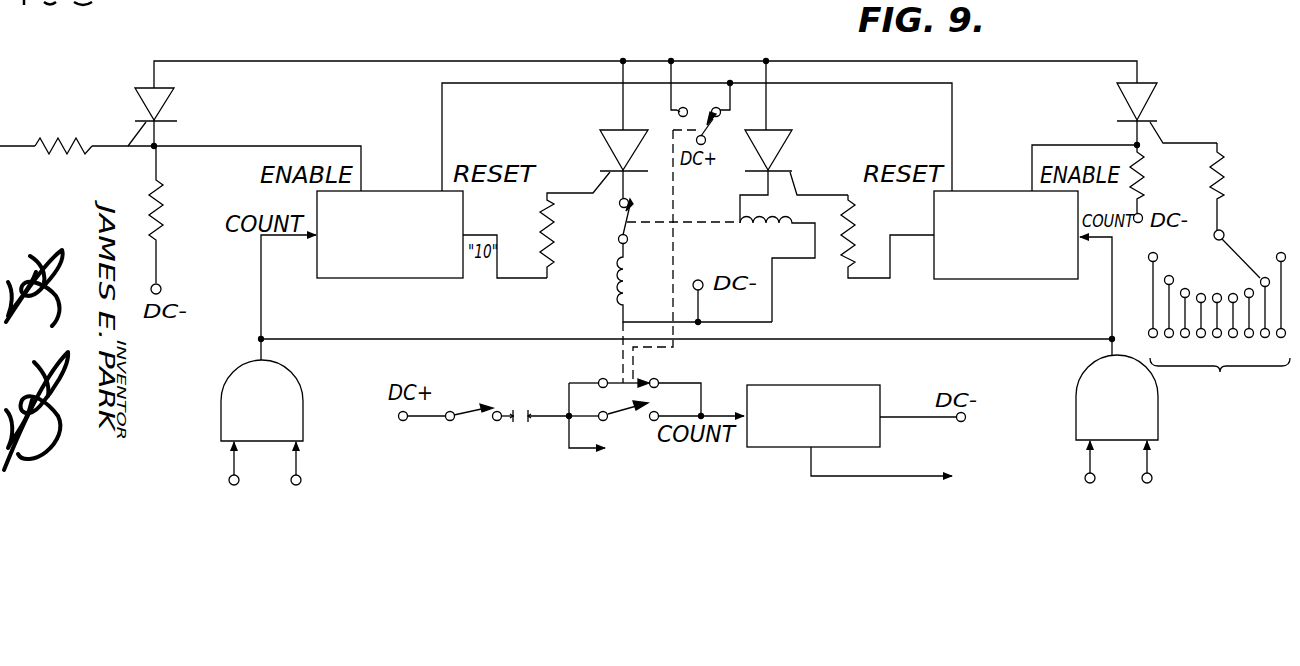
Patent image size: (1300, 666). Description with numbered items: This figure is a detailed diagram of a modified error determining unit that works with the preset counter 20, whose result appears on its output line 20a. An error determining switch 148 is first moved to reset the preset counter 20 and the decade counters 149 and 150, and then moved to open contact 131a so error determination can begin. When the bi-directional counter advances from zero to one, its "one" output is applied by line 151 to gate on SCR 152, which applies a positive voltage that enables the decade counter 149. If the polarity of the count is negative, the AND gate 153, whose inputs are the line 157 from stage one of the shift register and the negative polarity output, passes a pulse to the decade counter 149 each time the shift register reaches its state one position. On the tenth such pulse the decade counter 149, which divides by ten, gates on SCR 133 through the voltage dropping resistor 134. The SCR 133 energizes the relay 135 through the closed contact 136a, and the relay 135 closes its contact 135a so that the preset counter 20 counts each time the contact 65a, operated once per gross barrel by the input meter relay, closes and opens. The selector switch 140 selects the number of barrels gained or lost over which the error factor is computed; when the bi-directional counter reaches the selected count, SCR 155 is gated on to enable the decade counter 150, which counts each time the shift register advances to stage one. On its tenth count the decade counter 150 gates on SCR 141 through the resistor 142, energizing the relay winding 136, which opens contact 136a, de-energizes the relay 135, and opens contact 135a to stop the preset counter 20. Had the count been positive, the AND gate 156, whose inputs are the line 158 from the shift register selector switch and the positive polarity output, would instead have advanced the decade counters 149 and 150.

The line 151 is at (22, 148).
The SCR 152 is at (168, 101).
The SCR 133 is at (599, 139).
The voltage dropping resistor 134 is at (541, 230).
The relay 135 is at (616, 284).
The relay winding 136 is at (761, 238).
The contact 136a is at (621, 233).
The SCR 141 is at (790, 131).
The resistor 142 is at (853, 240).
The error determining switch 148 is at (722, 125).
The decade counter 149 is at (393, 279).
The decade counter 150 is at (1037, 279).
The AND gate 153 is at (297, 382).
The SCR 155 is at (1160, 99).
The AND gate 156 is at (1160, 412).
The line 157 is at (233, 466).
The line 158 is at (1088, 462).
The selector switch 140 is at (1219, 271).
The contact 131a is at (617, 380).
The contact 135a is at (633, 412).
The contact 65a is at (492, 402).
The preset counter 20 is at (850, 385).
The preset counter output line 20a is at (902, 476).